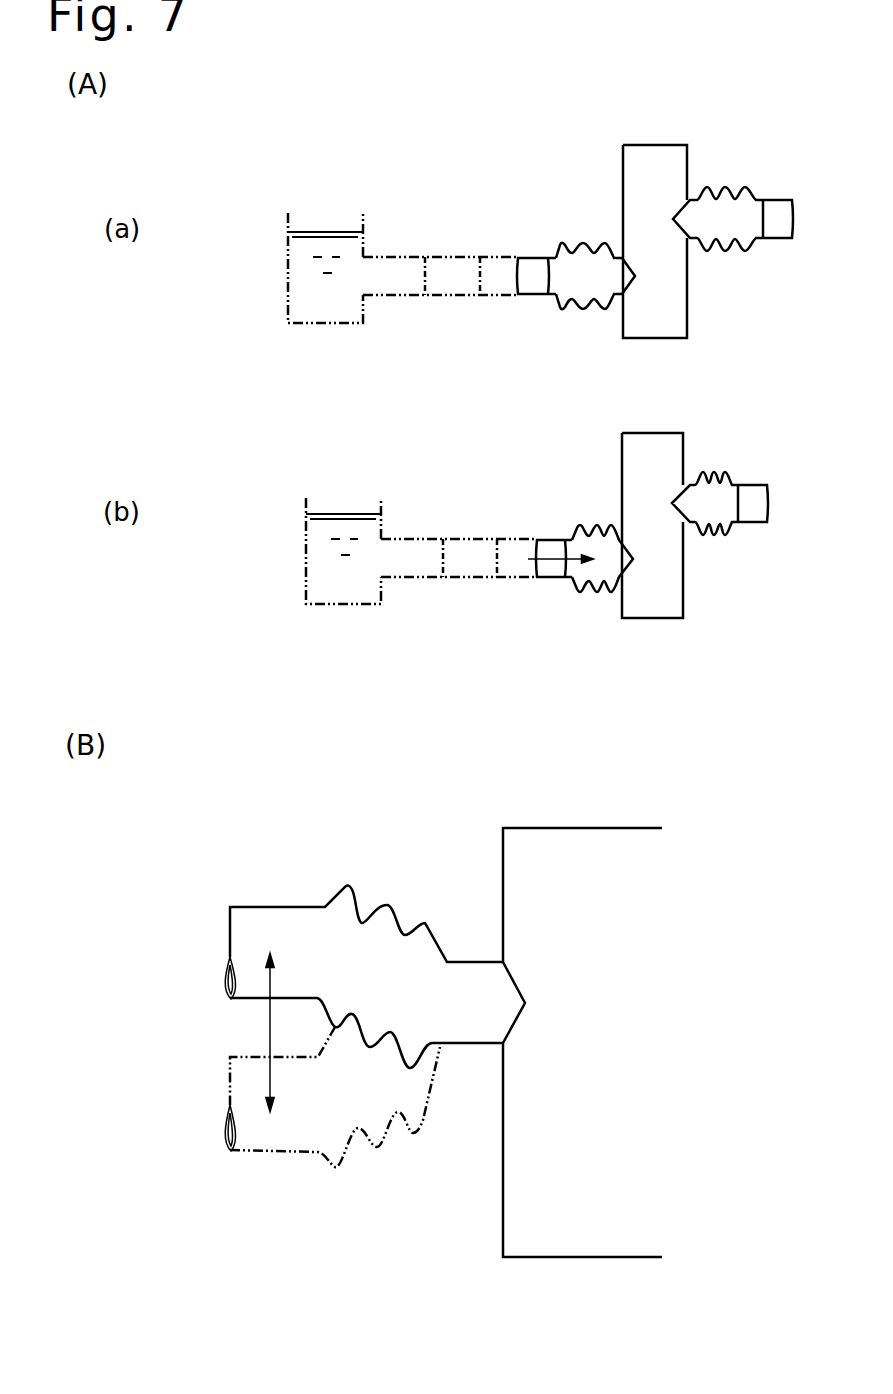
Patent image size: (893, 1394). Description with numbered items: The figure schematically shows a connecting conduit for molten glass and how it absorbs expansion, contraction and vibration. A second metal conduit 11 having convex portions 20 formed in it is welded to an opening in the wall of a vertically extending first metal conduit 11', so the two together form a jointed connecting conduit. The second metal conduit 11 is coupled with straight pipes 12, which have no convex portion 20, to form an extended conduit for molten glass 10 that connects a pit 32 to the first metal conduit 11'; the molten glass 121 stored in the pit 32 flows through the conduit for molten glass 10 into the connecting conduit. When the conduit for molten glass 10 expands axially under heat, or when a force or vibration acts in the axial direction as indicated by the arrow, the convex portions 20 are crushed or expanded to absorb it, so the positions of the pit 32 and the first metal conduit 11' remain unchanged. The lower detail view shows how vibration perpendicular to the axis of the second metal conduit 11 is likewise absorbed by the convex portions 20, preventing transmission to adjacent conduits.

The conduit for molten glass 10 is at (545, 174).
The second metal conduit 11 is at (509, 720).
The first metal conduit 11' is at (629, 701).
The straight pipe 12 is at (405, 242).
The convex portion 20 is at (605, 243).
The pit 32 is at (274, 265).
The molten glass 121 is at (328, 255).